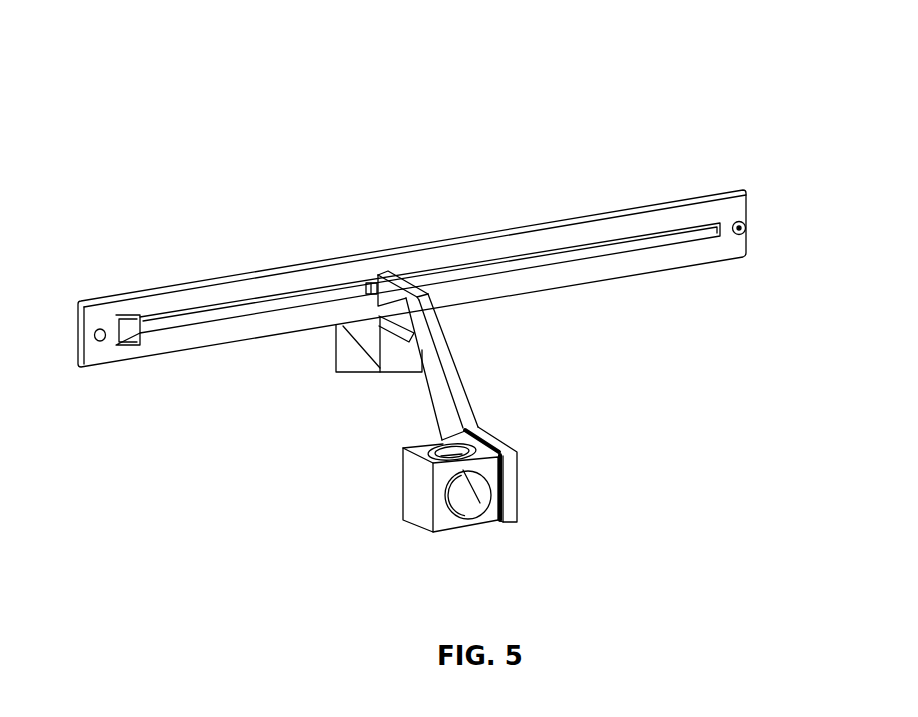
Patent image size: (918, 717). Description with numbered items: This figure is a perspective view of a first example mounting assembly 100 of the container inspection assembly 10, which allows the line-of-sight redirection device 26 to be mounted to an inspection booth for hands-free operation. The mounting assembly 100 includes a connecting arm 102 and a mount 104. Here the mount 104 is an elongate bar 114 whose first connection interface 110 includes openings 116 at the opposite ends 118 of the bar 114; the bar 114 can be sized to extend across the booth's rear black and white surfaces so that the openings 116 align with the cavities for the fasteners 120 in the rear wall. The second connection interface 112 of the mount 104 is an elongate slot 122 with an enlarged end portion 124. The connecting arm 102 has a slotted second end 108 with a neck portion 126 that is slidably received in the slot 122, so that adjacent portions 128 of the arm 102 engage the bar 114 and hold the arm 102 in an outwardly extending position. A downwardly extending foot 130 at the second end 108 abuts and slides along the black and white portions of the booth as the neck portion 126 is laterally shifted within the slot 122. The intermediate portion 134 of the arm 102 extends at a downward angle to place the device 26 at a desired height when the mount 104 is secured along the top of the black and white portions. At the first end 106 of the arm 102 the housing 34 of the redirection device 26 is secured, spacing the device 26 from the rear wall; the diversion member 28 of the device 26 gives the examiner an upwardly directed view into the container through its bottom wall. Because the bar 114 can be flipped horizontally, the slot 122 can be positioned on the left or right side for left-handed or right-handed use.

The container inspection assembly 10 is at (740, 53).
The mounting assembly 100 is at (435, 146).
The mount 104 is at (418, 284).
The elongate bar 114 is at (701, 214).
The first connection interface 110 is at (762, 189).
The opposite ends of the bar 118 is at (720, 254).
The elongate slot 122 is at (536, 246).
The enlarged end portion 124 is at (128, 312).
The openings 116 is at (103, 328).
The fasteners 120 is at (749, 228).
The second end of connecting arm 108 is at (394, 283).
The adjacent portions of the arm 128 is at (414, 306).
The neck portion 126 is at (365, 289).
The downwardly extending foot 130 is at (348, 363).
The second connection interface 112 is at (323, 341).
The connecting arm 102 is at (479, 367).
The intermediate portion of the arm 134 is at (446, 350).
The first end of connecting arm 106 is at (493, 445).
The line-of-sight redirection device 26 is at (447, 513).
The housing 34 is at (413, 498).
The diversion member 28 is at (470, 506).